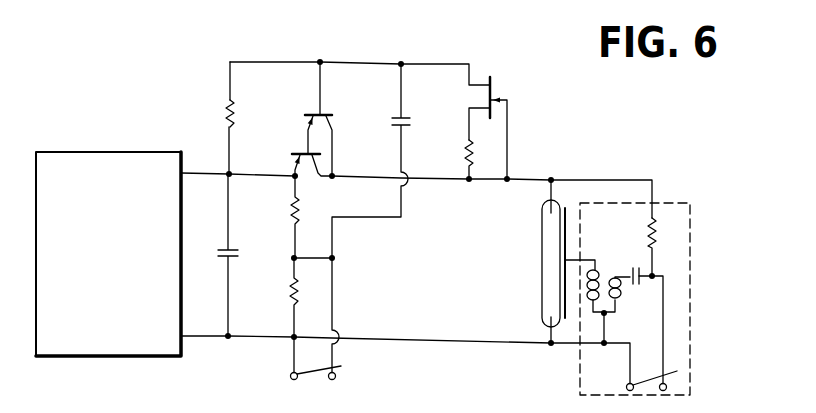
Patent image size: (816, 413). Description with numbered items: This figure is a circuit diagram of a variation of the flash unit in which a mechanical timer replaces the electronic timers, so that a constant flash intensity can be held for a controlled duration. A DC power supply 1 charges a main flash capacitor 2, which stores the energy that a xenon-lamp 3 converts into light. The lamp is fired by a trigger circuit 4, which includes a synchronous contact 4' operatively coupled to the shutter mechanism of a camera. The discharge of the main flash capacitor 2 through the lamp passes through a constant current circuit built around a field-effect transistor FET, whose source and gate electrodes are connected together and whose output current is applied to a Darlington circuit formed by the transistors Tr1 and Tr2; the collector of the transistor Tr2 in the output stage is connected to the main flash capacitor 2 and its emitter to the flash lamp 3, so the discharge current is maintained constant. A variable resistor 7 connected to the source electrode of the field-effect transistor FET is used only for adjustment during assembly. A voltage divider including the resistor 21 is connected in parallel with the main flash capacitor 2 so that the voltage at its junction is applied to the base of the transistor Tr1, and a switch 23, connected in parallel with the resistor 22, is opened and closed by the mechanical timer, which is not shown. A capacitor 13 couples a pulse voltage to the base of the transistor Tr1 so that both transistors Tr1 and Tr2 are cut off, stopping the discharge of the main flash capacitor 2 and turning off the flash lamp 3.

The DC power supply 1 is at (116, 152).
The main flash capacitor 2 is at (240, 252).
The resistor 21 is at (289, 205).
The resistor 22 is at (288, 290).
The switch 23 is at (343, 372).
The capacitor 13 is at (414, 122).
The variable resistor 7 is at (461, 151).
The xenon-lamp 3 is at (543, 213).
The trigger circuit 4 is at (649, 299).
The synchronous contact 4' is at (673, 374).
The transistor Tr1 is at (304, 117).
The transistor Tr2 is at (303, 162).
The field-effect transistor FET is at (493, 84).